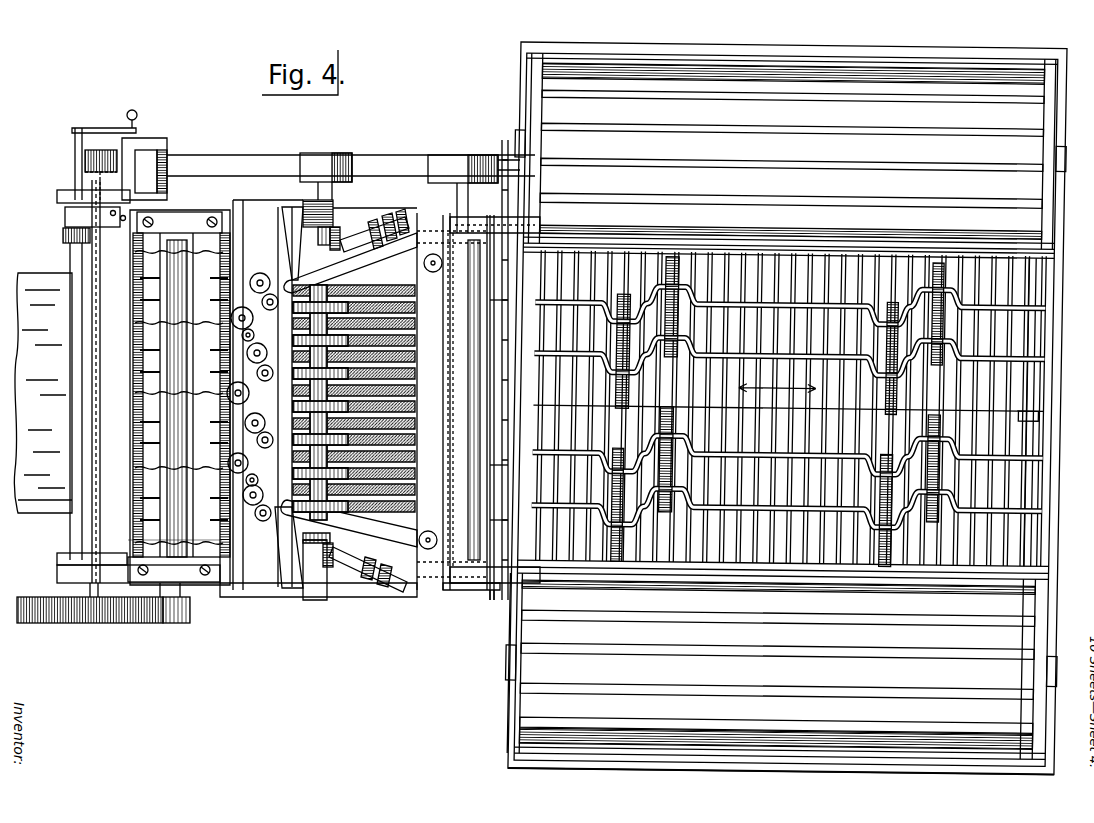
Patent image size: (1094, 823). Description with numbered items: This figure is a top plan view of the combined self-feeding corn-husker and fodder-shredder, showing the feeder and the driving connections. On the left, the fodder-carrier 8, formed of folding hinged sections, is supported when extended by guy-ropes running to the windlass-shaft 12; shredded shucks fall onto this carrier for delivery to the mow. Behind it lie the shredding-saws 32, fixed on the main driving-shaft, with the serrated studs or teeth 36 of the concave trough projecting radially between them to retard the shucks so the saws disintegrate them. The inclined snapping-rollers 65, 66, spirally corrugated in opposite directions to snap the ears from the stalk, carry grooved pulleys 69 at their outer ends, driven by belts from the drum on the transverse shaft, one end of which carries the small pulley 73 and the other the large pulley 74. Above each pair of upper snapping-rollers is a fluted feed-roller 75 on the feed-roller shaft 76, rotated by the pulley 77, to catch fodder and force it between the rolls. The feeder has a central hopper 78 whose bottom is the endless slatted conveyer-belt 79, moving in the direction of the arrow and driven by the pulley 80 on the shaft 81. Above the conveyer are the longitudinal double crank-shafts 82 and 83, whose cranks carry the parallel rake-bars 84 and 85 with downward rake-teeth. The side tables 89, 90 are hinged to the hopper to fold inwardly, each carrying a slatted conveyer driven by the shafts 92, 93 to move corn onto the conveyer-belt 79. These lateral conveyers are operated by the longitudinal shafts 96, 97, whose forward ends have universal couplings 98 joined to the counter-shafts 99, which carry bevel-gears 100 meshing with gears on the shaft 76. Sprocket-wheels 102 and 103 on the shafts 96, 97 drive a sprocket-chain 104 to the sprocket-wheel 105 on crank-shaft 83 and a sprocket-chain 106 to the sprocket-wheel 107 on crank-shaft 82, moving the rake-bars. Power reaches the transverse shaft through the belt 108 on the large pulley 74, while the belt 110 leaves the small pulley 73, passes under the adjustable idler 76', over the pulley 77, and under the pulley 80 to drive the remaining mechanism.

The fodder-carrier 8 is at (48, 515).
The windlass-shaft 12 is at (70, 541).
The shredding-saws 32 is at (140, 547).
The serrated studs or teeth 36 is at (140, 506).
The snapping-roller 65 is at (420, 441).
The snapping-roller 66 is at (412, 468).
The grooved pulleys 69 is at (264, 522).
The small pulley 73 is at (103, 156).
The large pulley 74 is at (56, 625).
The fluted feed-roller 75 is at (280, 398).
The feed-roller shaft 76 is at (282, 204).
The adjustable idler 76' is at (160, 169).
The pulley 77 is at (310, 153).
The central hopper 78 is at (1030, 494).
The endless slatted carrier or conveyer-belt 79 is at (1045, 410).
The pulley 80 is at (463, 169).
The conveyer-shaft 81 is at (460, 200).
The double crank-shafts 82 is at (742, 450).
The double crank-shafts 83 is at (742, 299).
The parallel bars 84 is at (667, 482).
The parallel bars 85 is at (628, 292).
The side table 89 is at (786, 400).
The side table 90 is at (780, 784).
The shaft 92 is at (648, 580).
The shaft 93 is at (628, 79).
The longitudinal shaft 96 is at (484, 590).
The longitudinal shaft 97 is at (494, 217).
The universal couplings 98 is at (392, 222).
The counter-shafts 99 is at (356, 240).
The bevel-gears 100 is at (333, 233).
The sprocket-wheel 102 is at (493, 601).
The sprocket-wheel 103 is at (505, 150).
The sprocket-chain 104 is at (500, 545).
The sprocket-wheel 105 is at (494, 346).
The sprocket-chain 106 is at (498, 407).
The sprocket-wheel 107 is at (499, 482).
The belt 108 is at (167, 625).
The belt 110 is at (351, 165).